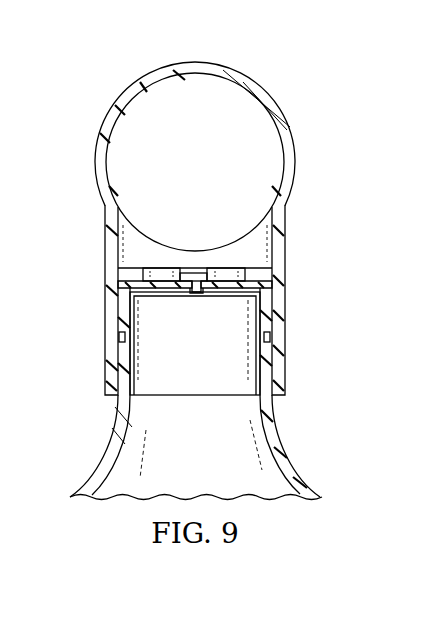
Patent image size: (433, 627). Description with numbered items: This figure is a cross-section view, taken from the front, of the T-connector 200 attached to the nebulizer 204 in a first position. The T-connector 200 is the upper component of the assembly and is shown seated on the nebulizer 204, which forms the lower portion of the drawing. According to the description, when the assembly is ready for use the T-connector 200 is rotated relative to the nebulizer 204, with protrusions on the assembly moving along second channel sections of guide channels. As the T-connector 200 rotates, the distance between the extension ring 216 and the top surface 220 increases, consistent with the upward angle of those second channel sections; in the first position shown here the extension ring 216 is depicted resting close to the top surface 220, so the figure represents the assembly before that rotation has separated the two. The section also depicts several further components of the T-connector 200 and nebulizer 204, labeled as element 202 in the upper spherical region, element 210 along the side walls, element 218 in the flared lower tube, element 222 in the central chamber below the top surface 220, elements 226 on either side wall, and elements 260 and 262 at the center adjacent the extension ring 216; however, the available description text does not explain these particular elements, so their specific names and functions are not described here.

The T-connector 200 is at (101, 72).
The spherical housing ring 202 is at (212, 65).
The nebulizer 204 is at (93, 408).
The housing 210 is at (105, 257).
The extension ring 216 is at (135, 268).
The nozzle tube 218 is at (105, 452).
The top surface 220 is at (273, 280).
The chamber 222 is at (208, 293).
The protrusions 226 is at (119, 338).
The latch 260 is at (187, 293).
The cap block 262 is at (186, 275).